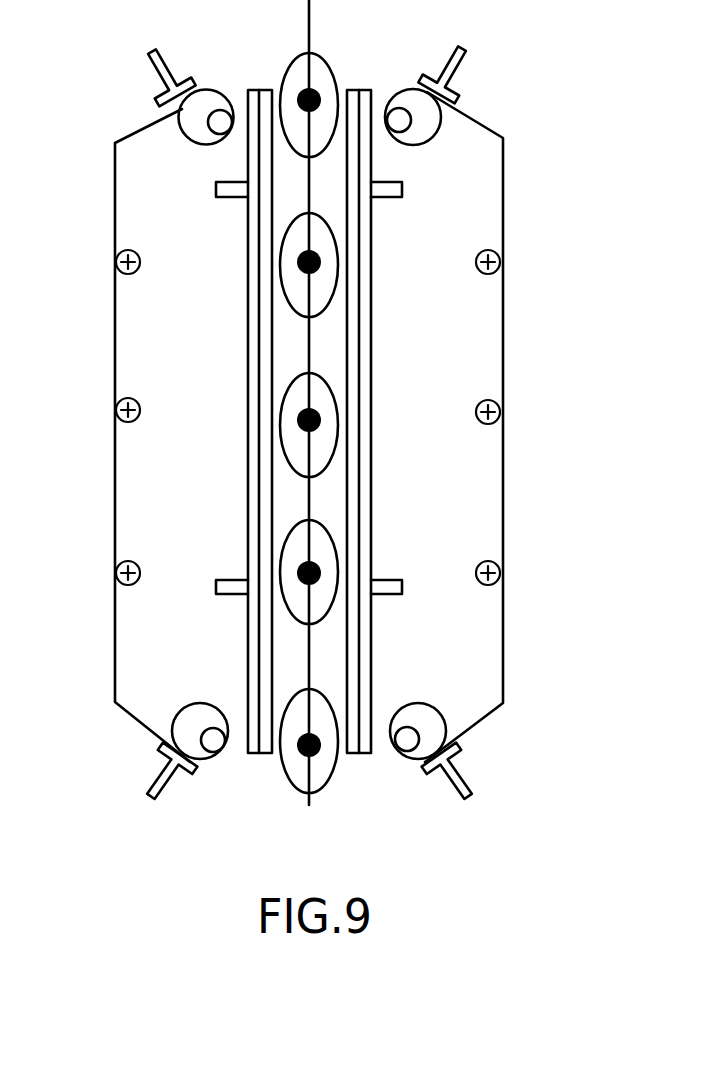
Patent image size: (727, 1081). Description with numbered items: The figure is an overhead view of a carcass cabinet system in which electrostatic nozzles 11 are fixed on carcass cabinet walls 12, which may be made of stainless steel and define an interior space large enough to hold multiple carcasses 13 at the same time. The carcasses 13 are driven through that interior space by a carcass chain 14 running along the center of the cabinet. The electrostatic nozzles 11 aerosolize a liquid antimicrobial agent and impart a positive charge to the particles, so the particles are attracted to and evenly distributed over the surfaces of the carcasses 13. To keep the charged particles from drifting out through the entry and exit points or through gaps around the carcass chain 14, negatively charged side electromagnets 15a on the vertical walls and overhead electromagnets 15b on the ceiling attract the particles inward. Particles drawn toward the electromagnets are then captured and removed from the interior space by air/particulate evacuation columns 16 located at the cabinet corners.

The electrostatic nozzle 11 is at (127, 562).
The carcass cabinet wall 12 is at (115, 619).
The carcass 13 is at (309, 573).
The carcass chain 14 is at (308, 655).
The side electromagnet 15a is at (158, 58).
The overhead electromagnet 15b is at (248, 240).
The air/particulate evacuation column 16 is at (192, 112).